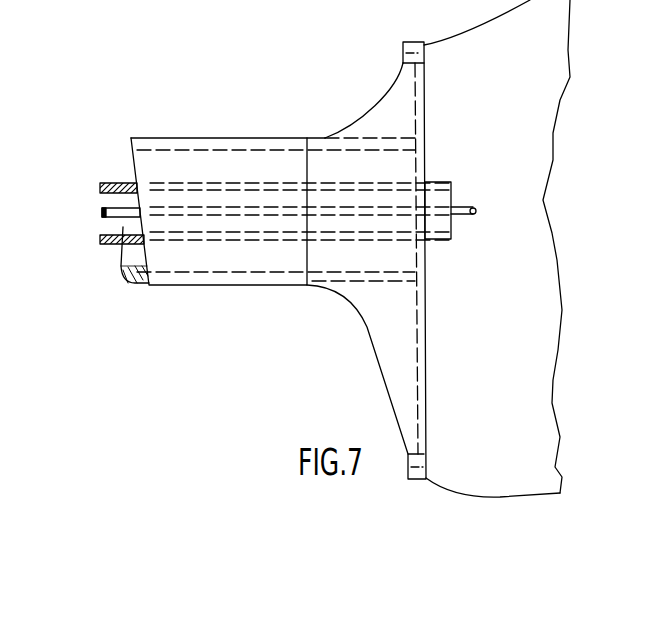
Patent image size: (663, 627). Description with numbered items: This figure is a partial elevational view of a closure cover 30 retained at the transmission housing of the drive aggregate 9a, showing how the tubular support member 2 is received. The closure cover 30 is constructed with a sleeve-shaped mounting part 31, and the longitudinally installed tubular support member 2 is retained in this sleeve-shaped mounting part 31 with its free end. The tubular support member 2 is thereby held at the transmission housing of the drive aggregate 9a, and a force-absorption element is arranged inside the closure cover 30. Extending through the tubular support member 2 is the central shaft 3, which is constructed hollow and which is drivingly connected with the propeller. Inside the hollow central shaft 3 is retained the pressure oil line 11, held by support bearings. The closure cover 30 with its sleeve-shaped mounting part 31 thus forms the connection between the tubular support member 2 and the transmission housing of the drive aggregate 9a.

The tubular support member 2 is at (203, 286).
The central shaft 3 is at (112, 244).
The pressure oil line 11 is at (102, 212).
The closure cover 30 is at (345, 101).
The sleeve-shaped mounting part 31 is at (347, 287).
The drive aggregate 9a is at (477, 481).